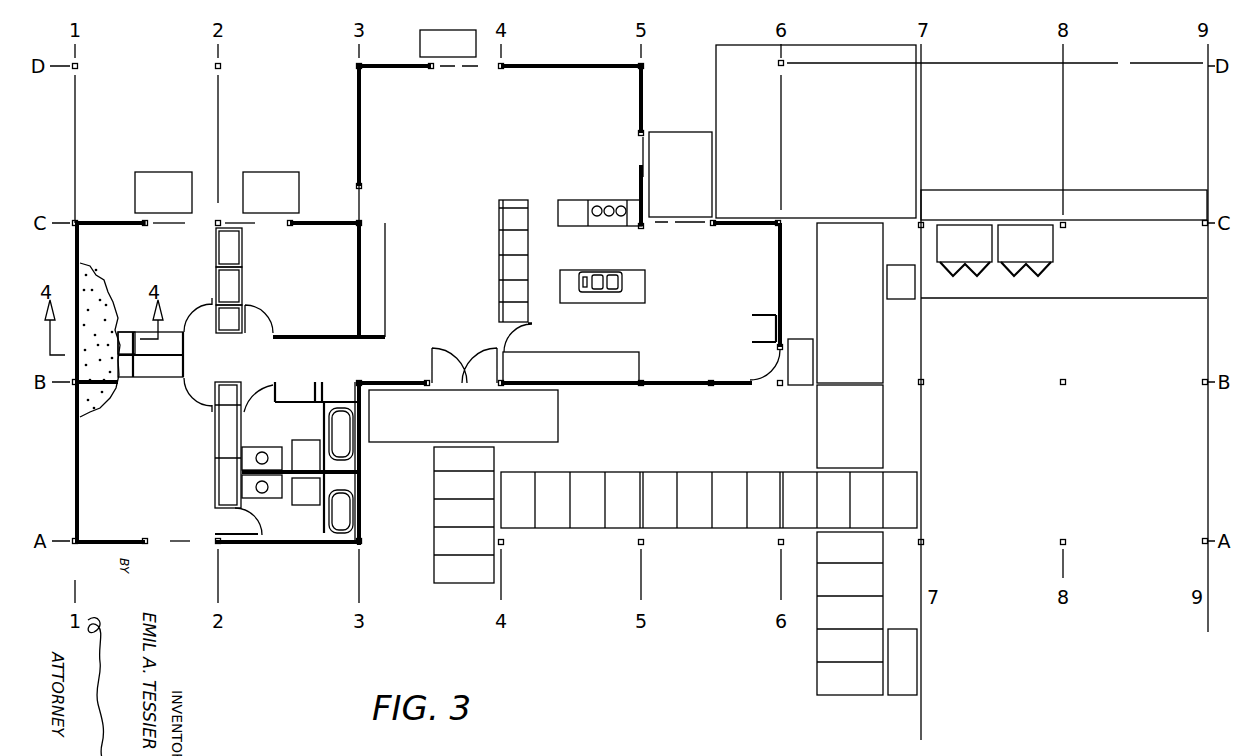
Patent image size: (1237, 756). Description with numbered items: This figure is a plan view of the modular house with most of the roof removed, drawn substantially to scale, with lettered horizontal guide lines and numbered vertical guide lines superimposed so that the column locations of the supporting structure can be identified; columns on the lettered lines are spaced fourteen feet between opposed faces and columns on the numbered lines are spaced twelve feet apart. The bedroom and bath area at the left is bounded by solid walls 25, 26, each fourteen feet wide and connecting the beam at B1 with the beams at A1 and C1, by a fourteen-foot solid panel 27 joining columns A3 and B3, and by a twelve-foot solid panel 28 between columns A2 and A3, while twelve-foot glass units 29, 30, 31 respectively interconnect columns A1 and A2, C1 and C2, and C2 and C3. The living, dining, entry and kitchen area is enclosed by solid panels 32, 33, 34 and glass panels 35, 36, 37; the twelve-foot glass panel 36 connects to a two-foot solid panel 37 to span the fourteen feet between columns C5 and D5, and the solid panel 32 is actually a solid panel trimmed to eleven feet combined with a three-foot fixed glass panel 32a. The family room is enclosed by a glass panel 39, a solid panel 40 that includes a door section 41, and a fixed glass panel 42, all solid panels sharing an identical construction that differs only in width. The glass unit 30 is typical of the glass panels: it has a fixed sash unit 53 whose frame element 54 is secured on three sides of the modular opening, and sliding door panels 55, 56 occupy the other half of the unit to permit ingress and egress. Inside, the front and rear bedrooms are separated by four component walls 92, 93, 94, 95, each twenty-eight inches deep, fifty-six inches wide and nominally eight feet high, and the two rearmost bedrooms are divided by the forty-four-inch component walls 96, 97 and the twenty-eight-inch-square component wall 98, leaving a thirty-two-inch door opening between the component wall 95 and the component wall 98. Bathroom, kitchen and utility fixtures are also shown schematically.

The solid wall 25 is at (75, 488).
The solid wall 26 is at (76, 258).
The solid panel 27 is at (362, 500).
The solid panel 28 is at (274, 544).
The glass unit 29 is at (140, 544).
The glass unit 30 is at (118, 222).
The glass unit 31 is at (330, 222).
The solid panel 32 is at (363, 152).
The fixed glass panel 32a is at (361, 210).
The solid panel 33 is at (540, 68).
The solid panel 34 is at (592, 385).
The glass panel 35 is at (408, 68).
The glass panel 36 is at (640, 102).
The solid panel 37 is at (680, 174).
The glass panel 39 is at (746, 228).
The solid panel 40 is at (783, 296).
The door section 41 is at (760, 370).
The fixed glass panel 42 is at (682, 385).
The fixed sash unit 53 is at (135, 226).
The frame element 54 is at (145, 220).
The sliding door panel 55 is at (168, 226).
The sliding door panel 56 is at (199, 226).
The component wall 92 is at (124, 386).
The component wall 93 is at (157, 378).
The component wall 94 is at (126, 334).
The component wall 95 is at (175, 333).
The component wall 96 is at (236, 248).
The component wall 97 is at (236, 286).
The component wall 98 is at (240, 322).